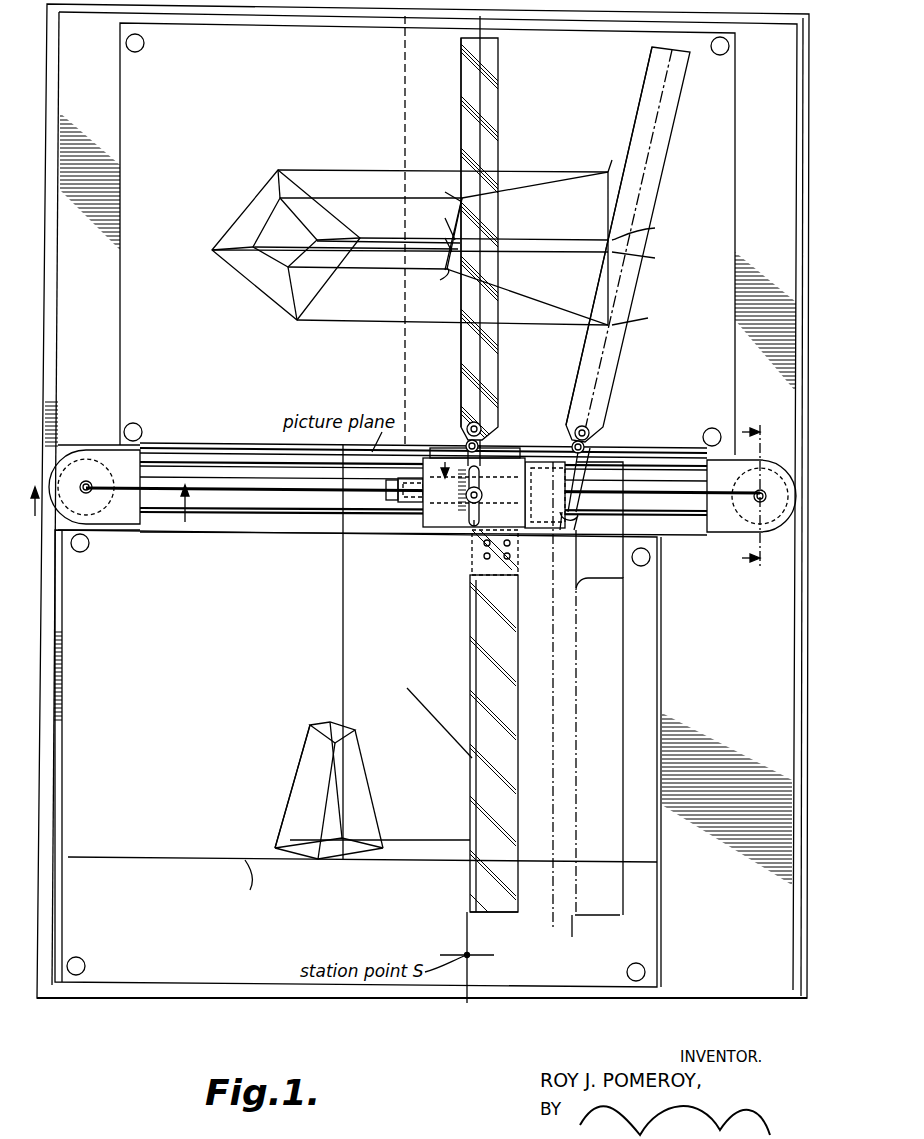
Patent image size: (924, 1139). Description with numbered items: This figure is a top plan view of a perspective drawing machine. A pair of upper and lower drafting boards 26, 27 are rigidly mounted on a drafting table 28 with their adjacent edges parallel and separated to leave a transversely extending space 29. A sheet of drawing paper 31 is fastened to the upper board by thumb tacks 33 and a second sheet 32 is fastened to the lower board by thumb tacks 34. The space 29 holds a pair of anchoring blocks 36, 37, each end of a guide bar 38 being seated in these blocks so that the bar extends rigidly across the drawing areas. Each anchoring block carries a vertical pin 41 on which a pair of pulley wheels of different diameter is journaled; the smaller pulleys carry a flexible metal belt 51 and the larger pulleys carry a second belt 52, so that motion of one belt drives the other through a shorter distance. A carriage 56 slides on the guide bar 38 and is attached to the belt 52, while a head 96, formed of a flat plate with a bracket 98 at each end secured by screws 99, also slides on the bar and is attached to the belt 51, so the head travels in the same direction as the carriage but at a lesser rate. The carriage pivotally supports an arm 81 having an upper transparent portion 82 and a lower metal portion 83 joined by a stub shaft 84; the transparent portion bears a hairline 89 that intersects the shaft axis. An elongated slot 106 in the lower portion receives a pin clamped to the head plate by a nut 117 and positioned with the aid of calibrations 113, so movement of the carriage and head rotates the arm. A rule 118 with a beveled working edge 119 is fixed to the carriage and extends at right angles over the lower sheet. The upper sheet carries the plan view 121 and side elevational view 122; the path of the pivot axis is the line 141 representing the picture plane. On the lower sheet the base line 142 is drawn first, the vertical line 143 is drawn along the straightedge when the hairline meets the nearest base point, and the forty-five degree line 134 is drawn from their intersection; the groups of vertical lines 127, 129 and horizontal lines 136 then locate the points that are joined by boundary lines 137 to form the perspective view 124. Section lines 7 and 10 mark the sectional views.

The section line 7- 7 is at (116, 509).
The section line 10- 10 is at (746, 495).
The upper drafting board 26 is at (78, 498).
The lower drafting board 27 is at (235, 1018).
The drafting table 28 is at (58, 1005).
The transversely extending space 29 is at (160, 528).
The sheet of drawing paper 31 is at (135, 300).
The sheet of drawing paper 32 is at (660, 622).
The thumb tacks 33 is at (142, 48).
The thumb tacks 34 is at (86, 550).
The anchoring block 36 is at (88, 455).
The anchoring block 37 is at (775, 470).
The guide bar 38 is at (248, 495).
The pin 41 is at (92, 487).
The belt 51 is at (185, 455).
The belt 52 is at (220, 458).
The carriage 56 is at (438, 545).
The arm 81 is at (500, 75).
The transparent portion 82 is at (490, 108).
The lower metal portion 83 is at (480, 474).
The stub shaft 84 is at (480, 445).
The hairline 89 is at (480, 140).
The head 96 is at (445, 462).
The bracket 98 is at (398, 510).
The screws 99 is at (418, 512).
The slot 106 is at (480, 520).
The calibrations 113 is at (460, 494).
The nut 117 is at (482, 493).
The rule 118 is at (515, 900).
The working edge 119 is at (468, 893).
The plan view 121 is at (240, 212).
The side elevational view 122 is at (555, 182).
The perspective view 124 is at (285, 765).
The group of vertical lines 127 is at (340, 637).
The group of vertical lines 129 is at (560, 683).
The 45° line 134 is at (420, 703).
The group of horizontal lines 136 is at (410, 838).
The boundary lines 137 is at (285, 810).
The line of movement 141 is at (648, 462).
The base line 142 is at (140, 838).
The vertical line 143 is at (570, 936).